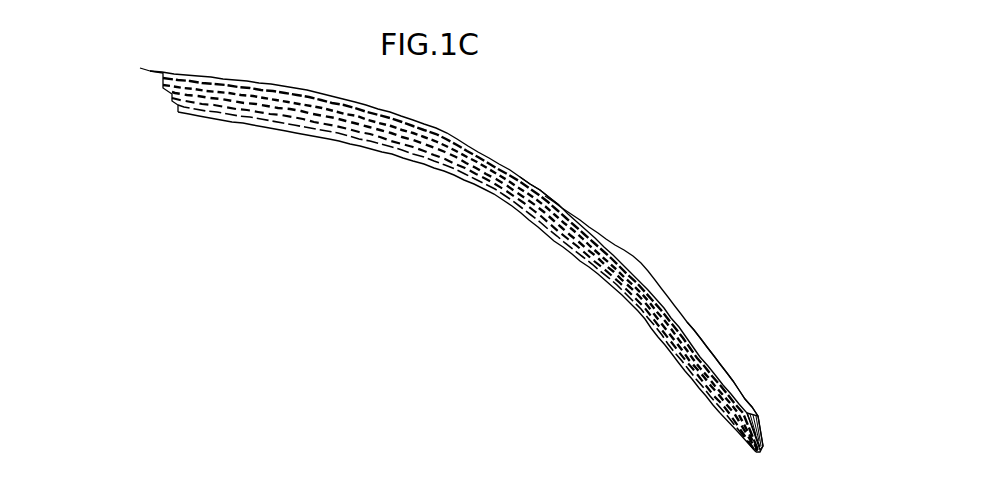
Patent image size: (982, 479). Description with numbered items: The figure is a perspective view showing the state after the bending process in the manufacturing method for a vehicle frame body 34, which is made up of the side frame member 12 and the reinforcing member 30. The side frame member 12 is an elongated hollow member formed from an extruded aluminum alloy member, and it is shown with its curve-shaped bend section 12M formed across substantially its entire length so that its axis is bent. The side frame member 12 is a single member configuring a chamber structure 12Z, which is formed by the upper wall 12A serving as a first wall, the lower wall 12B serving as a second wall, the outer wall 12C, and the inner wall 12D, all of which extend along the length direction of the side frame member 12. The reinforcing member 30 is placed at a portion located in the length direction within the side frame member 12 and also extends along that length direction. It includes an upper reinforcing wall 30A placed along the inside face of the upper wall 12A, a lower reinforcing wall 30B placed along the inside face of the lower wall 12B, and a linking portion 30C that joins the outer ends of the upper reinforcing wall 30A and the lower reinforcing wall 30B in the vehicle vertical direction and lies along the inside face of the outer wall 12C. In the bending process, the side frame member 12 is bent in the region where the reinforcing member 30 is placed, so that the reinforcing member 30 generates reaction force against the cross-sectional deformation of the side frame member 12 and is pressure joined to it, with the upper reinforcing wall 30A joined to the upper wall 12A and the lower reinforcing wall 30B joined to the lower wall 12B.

The side frame member 12 is at (698, 290).
The upper wall 12A is at (743, 398).
The lower wall 12B is at (764, 442).
The outer wall 12C is at (764, 412).
The inner wall 12D is at (738, 422).
The bend section 12M is at (552, 158).
The chamber structure 12Z is at (766, 431).
The reinforcing member 30 is at (494, 158).
The upper reinforcing wall 30A is at (578, 212).
The lower reinforcing wall 30B is at (358, 146).
The linking portion 30C is at (640, 266).
The vehicle frame body 34 is at (706, 201).